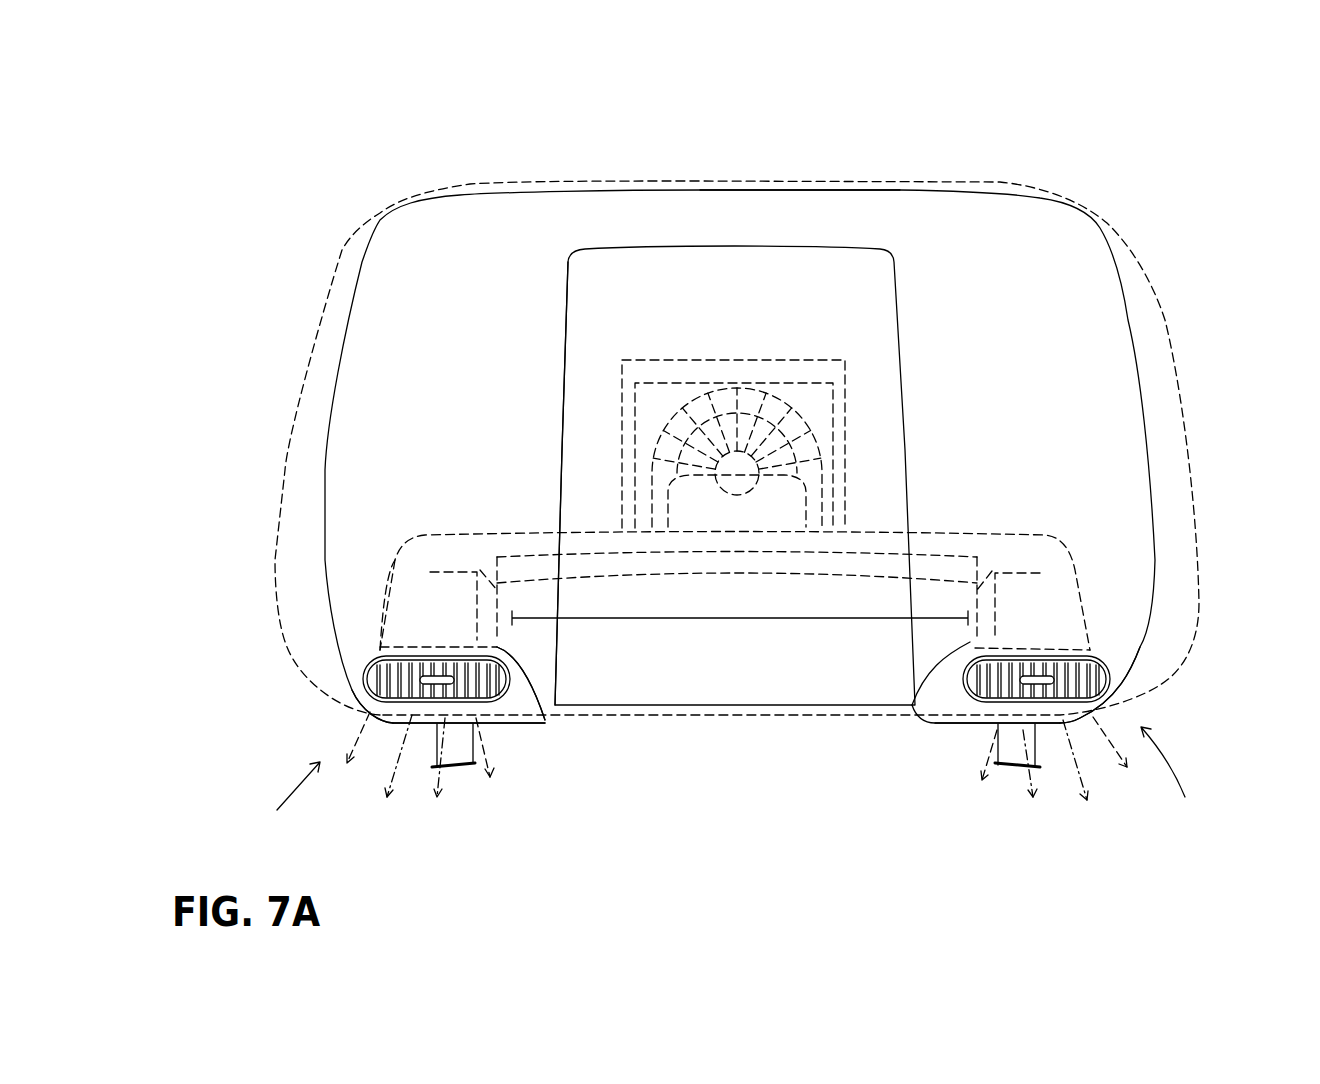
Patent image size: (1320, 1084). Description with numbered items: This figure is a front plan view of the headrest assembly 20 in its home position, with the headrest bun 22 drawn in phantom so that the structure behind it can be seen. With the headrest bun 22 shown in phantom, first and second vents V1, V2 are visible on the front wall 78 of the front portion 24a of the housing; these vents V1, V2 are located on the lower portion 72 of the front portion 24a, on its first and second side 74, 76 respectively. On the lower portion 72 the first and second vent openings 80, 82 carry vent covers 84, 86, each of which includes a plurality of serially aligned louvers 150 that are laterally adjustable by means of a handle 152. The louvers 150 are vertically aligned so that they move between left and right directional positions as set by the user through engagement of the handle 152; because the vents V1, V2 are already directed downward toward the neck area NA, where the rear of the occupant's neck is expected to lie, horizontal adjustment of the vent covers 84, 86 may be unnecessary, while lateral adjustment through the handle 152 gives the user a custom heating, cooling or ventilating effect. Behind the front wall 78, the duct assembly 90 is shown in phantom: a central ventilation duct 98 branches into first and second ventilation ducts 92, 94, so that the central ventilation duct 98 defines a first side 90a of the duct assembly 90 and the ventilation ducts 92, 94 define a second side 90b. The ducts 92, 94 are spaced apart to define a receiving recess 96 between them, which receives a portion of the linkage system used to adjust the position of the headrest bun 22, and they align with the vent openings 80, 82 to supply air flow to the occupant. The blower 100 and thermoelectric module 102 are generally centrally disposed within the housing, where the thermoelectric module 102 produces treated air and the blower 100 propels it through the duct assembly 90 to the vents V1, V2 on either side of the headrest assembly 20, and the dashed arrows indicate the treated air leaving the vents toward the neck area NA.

The headrest assembly 20 is at (1087, 145).
The headrest bun 22 is at (1175, 365).
The front portion of the housing 24a is at (1063, 270).
The lower portion 72 is at (521, 683).
The first side 74 is at (353, 630).
The second side 76 is at (1120, 600).
The front wall 78 is at (438, 352).
The first vent opening 80 is at (370, 697).
The second vent opening 82 is at (1130, 682).
The first vent cover 84 is at (360, 677).
The second vent cover 86 is at (975, 708).
The duct assembly 90 is at (943, 528).
The first side of the duct assembly 90a is at (788, 503).
The second side of the duct assembly 90b is at (545, 720).
The first ventilation duct 92 is at (418, 597).
The second ventilation duct 94 is at (1040, 632).
The receiving recess 96 is at (682, 620).
The central ventilation duct 98 is at (713, 503).
The blower 100 is at (790, 383).
The thermoelectric module 102 is at (697, 360).
The louvers 150 is at (393, 707).
The handle 152 is at (420, 722).
The neck area NA is at (488, 854).
The first vent V1 is at (281, 789).
The second vent V2 is at (1172, 776).